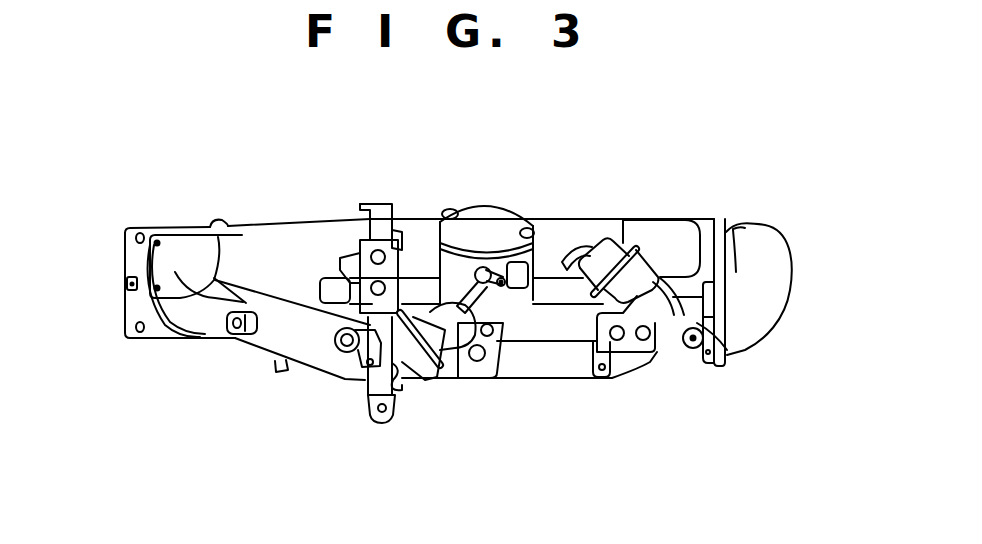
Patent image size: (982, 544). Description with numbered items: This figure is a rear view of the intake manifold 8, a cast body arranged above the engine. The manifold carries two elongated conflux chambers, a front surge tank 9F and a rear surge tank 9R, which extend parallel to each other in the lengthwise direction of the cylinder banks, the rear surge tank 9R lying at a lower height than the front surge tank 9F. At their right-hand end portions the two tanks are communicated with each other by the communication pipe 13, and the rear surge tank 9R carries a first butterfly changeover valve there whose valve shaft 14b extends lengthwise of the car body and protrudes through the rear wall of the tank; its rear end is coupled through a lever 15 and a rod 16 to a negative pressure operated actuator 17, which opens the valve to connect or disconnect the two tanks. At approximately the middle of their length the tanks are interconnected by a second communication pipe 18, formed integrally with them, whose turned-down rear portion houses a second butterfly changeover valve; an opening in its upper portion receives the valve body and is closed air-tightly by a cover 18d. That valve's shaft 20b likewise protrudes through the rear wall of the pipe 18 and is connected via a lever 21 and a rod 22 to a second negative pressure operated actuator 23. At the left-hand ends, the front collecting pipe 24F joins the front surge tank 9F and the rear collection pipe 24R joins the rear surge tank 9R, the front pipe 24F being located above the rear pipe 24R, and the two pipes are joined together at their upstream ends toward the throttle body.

The intake manifold 8 is at (297, 222).
The front surge tank 9F is at (587, 219).
The rear surge tank 9R is at (562, 380).
The communication pipe 13 is at (785, 308).
The valve shaft 14b is at (727, 350).
The lever 15 is at (693, 355).
The rod 16 is at (665, 353).
The negative pressure operated actuator 17 is at (623, 243).
The communication pipe 18 is at (437, 240).
The cover 18d is at (490, 207).
The valve shaft 20b is at (487, 268).
The lever 21 is at (513, 262).
The rod 22 is at (460, 363).
The negative pressure operated actuator 23 is at (423, 380).
The front collecting pipe 24F is at (262, 237).
The rear collection pipe 24R is at (300, 367).